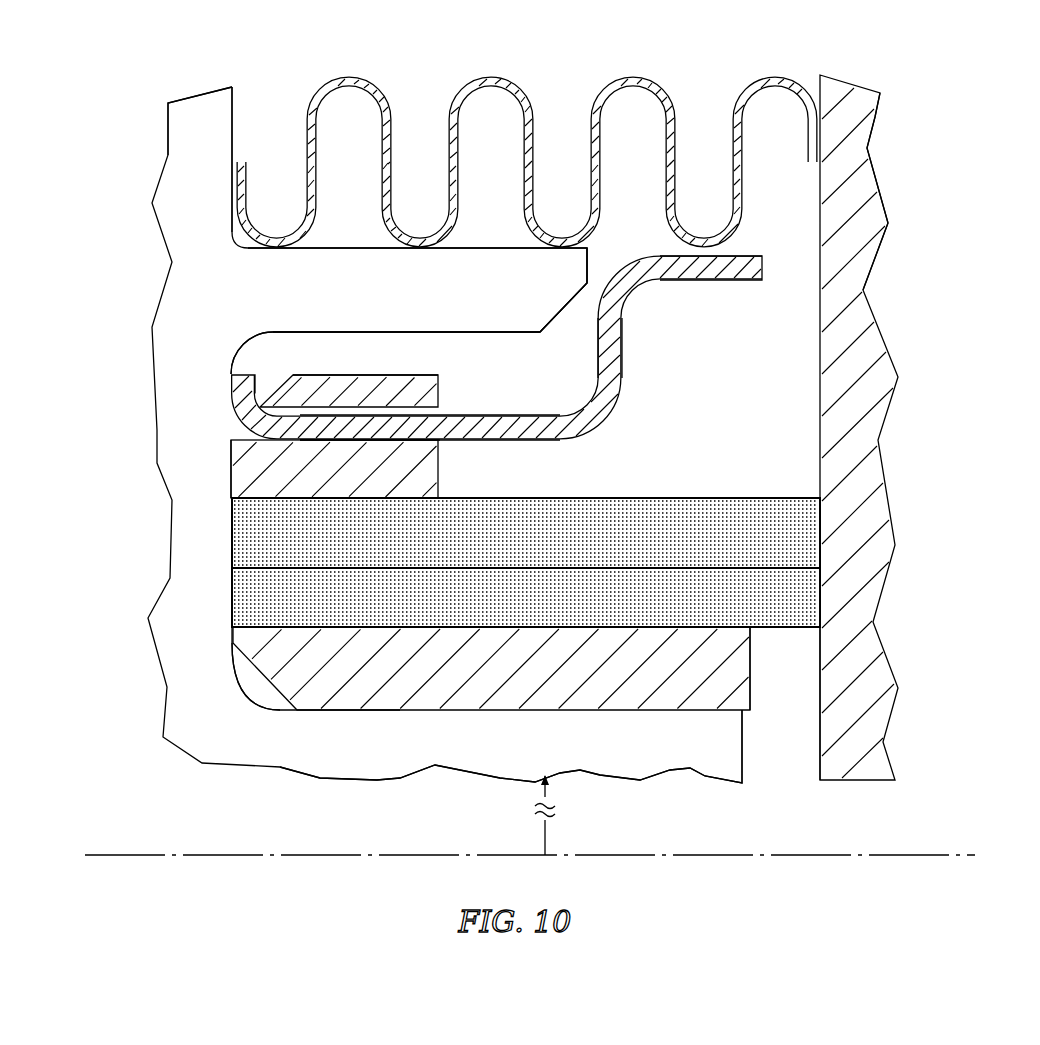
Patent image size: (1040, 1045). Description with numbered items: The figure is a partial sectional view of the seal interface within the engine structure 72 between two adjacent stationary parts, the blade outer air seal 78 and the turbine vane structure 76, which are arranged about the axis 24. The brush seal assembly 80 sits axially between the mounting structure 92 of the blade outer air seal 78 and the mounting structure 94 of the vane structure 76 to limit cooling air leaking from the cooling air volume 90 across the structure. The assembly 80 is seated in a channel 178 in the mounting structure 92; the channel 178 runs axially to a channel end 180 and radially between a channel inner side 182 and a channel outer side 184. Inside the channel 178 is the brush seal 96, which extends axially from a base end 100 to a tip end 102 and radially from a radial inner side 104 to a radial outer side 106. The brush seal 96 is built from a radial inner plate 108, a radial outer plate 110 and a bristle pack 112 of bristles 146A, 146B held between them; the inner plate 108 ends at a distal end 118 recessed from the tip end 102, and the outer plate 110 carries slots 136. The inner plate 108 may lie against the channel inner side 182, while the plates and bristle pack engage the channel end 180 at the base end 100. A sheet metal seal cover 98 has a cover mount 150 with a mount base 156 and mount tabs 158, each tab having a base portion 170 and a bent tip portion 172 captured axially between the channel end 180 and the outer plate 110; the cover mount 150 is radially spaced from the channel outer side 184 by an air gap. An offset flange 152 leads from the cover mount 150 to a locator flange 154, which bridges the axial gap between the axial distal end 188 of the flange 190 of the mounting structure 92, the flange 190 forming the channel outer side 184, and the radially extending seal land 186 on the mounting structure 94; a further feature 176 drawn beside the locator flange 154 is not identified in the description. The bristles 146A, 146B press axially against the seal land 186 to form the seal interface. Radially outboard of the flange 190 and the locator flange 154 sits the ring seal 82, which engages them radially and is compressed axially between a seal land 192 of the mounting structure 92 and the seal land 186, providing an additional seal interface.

The axis 24 is at (215, 858).
The engine structure 72 is at (898, 79).
The turbine vane structure 76 is at (877, 172).
The blade outer air seal 78 is at (161, 171).
The brush seal assembly 80 is at (318, 716).
The ring seal 82 is at (668, 76).
The cooling air volume 90 is at (546, 77).
The mounting structure 92 is at (200, 121).
The mounting structure 94 is at (875, 256).
The brush seal 96 is at (692, 468).
The seal cover 98 is at (627, 350).
The base end 100 is at (232, 560).
The tip end 102 is at (822, 538).
The radial inner side 104 is at (350, 712).
The radial outer side 106 is at (395, 370).
The radial inner plate 108 is at (444, 677).
The radial outer plate 110 is at (321, 482).
The bristle pack 112 is at (735, 495).
The distal end 118 is at (752, 668).
The slot 136 is at (440, 410).
The brush seal bristle 146A is at (780, 617).
The brush seal bristle 146B is at (780, 515).
The cover mount 150 is at (527, 413).
The offset flange 152 is at (612, 328).
The locator flange 154 is at (693, 348).
The mount base 156 is at (510, 430).
The mount tab 158 is at (406, 450).
The base portion 170 is at (360, 428).
The tip portion 172 is at (241, 396).
The liner flange 176 is at (762, 270).
The channel 178 is at (247, 338).
The channel end 180 is at (240, 465).
The channel inner side 182 is at (398, 710).
The channel outer side 184 is at (380, 333).
The seal land 186 is at (818, 746).
The axial distal end 188 is at (590, 263).
The flange 190 is at (478, 297).
The seal land 192 is at (234, 120).